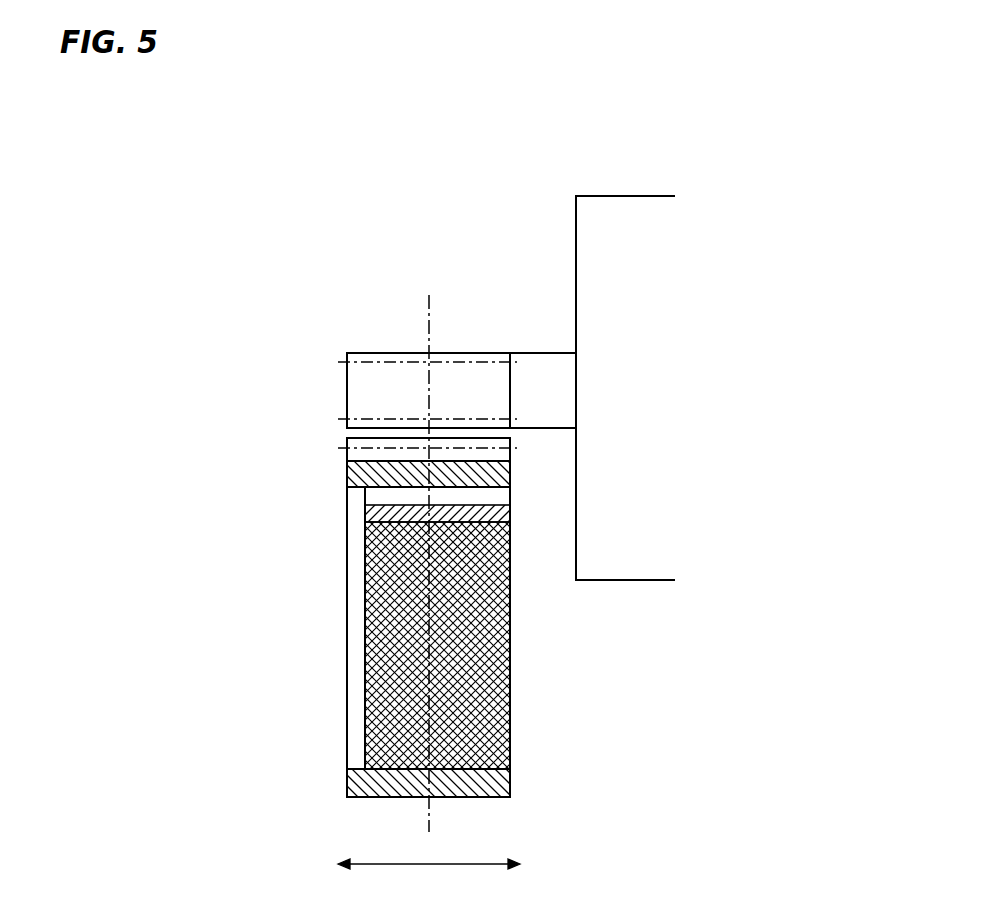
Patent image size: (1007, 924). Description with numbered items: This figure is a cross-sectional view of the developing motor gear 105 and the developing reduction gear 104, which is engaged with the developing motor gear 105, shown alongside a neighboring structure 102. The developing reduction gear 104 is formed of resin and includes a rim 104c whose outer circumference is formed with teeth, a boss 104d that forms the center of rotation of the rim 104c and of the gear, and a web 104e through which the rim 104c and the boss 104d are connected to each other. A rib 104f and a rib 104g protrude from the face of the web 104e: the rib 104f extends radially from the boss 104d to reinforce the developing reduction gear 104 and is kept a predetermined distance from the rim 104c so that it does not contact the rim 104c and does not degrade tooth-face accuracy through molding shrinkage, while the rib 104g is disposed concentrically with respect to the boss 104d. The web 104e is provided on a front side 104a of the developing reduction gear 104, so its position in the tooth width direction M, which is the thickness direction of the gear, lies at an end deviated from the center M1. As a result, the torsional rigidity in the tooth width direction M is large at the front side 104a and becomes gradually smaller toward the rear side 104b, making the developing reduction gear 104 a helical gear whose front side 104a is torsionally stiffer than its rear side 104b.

The housing / side wall 102 is at (576, 258).
The developing motor gear 105 is at (392, 352).
The developing reduction gear 104 is at (435, 617).
The front side 104a is at (348, 622).
The rear side 104b is at (510, 670).
The rim 104c is at (370, 474).
The boss 104d is at (468, 770).
The web 104e is at (357, 705).
The rib 104f is at (452, 612).
The rib 104g is at (372, 512).
The center in the tooth width direction M1 is at (428, 818).
The tooth width direction M is at (429, 878).